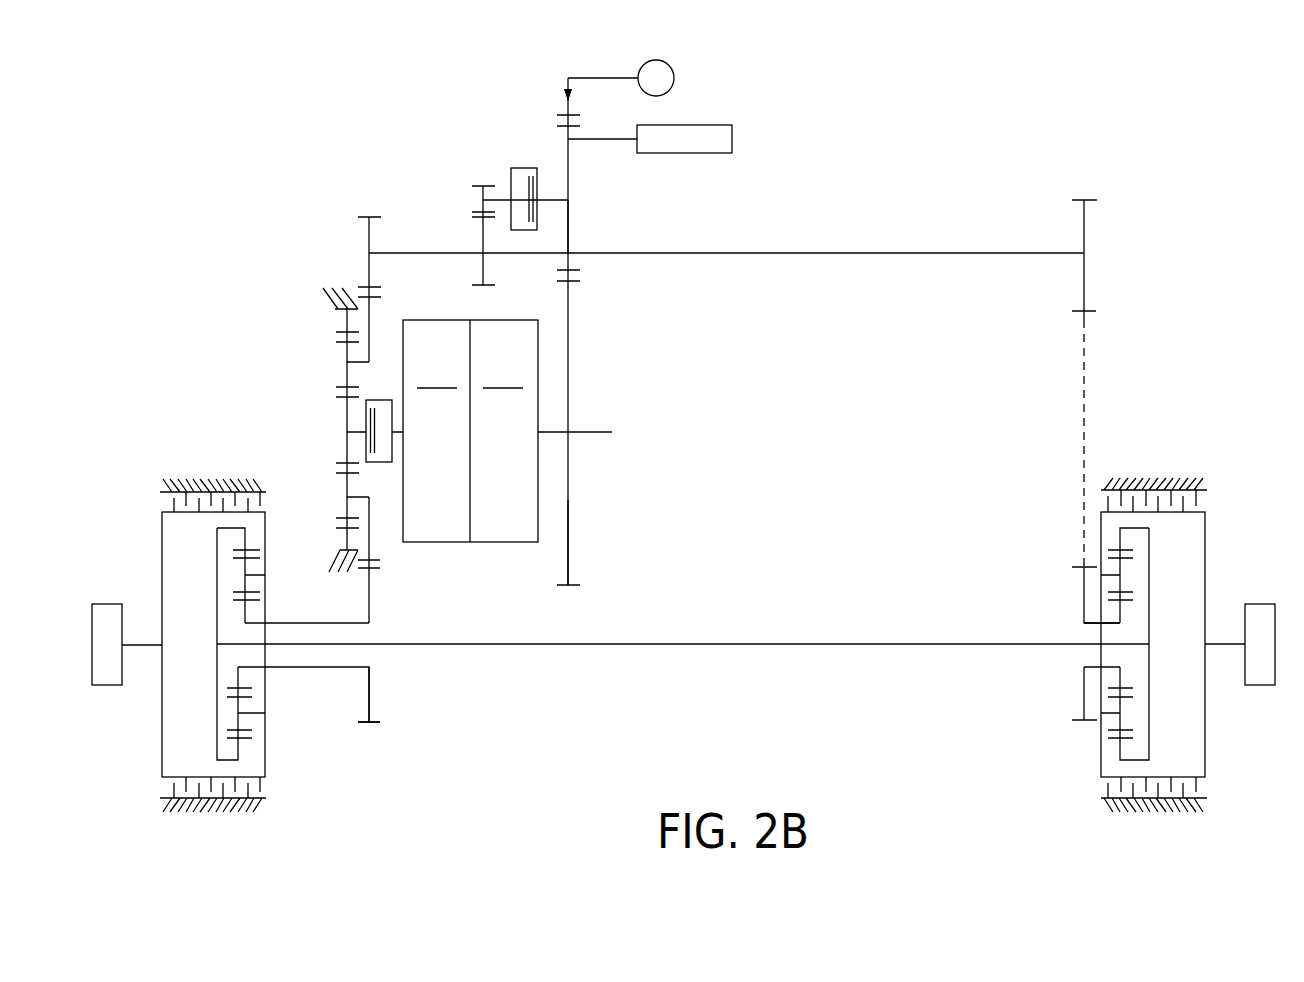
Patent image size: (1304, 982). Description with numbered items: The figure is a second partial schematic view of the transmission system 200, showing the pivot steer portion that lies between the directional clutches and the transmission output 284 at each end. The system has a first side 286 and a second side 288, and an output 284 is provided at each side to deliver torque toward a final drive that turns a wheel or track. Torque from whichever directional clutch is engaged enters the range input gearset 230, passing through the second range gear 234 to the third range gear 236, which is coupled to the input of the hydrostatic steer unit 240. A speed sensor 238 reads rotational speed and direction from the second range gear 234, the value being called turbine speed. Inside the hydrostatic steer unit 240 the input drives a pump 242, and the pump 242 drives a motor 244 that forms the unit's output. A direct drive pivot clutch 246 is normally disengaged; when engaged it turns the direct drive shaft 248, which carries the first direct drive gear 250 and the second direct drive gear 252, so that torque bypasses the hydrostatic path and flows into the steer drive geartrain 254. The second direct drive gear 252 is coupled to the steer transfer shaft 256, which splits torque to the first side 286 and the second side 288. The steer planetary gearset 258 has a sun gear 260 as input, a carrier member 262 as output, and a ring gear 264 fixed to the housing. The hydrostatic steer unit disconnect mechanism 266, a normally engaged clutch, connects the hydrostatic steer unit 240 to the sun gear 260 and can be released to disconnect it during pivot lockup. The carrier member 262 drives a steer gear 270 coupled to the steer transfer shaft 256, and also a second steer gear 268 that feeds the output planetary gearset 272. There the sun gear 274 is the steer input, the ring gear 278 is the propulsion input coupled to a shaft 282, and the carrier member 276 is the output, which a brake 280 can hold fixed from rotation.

The transmission system 200 is at (1184, 126).
The range input gearset 230 is at (590, 305).
The second range gear 234 is at (569, 172).
The third range gear 236 is at (568, 547).
The speed sensor 238 is at (733, 137).
The hydrostatic steer unit (HSU) 240 is at (535, 431).
The pump 242 is at (502, 406).
The motor 244 is at (437, 406).
The direct drive pivot clutch 246 is at (532, 150).
The direct drive shaft 248 is at (502, 200).
The first direct drive gear 250 is at (483, 202).
The second direct drive gear 252 is at (483, 237).
The steer drive geartrain 254 is at (1115, 268).
The steer transfer shaft 256 is at (897, 253).
The steer planetary gearset 258 is at (270, 355).
The sun gear 260 is at (347, 412).
The carrier member 262 is at (347, 488).
The ring gear 264 is at (347, 319).
The hydrostatic steer unit disconnect mechanism 266 is at (385, 388).
The second steer gear 268 is at (370, 593).
The steer gear 270 is at (369, 238).
The output planetary gearset 272 is at (147, 540).
The sun gear 274 is at (252, 603).
The carrier member 276 is at (243, 567).
The ring gear 278 is at (245, 540).
The brake 280 is at (147, 788).
The shaft 282 is at (783, 643).
The output 284 is at (110, 603).
The first side 286 is at (172, 252).
The second side 288 is at (1213, 253).